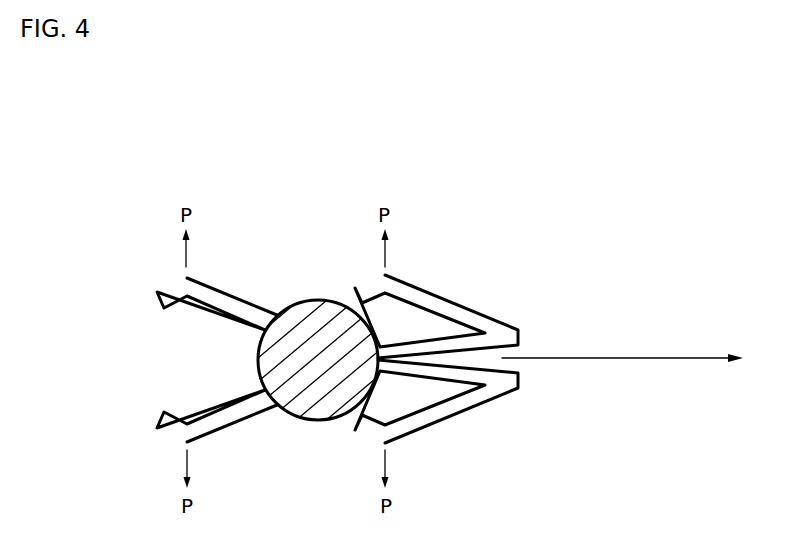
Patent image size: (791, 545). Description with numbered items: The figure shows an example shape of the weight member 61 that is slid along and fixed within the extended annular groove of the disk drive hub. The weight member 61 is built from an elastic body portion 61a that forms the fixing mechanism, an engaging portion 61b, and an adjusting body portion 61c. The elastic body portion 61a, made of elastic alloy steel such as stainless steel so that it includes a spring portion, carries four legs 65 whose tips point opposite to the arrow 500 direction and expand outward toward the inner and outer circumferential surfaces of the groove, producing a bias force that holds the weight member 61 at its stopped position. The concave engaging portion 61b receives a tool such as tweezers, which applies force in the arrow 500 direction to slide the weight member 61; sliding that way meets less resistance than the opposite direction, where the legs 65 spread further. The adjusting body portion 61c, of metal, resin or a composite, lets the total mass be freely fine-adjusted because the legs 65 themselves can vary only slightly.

The weight member 61 is at (213, 185).
The elastic body portion 61a is at (465, 290).
The engaging portion 61b is at (258, 354).
The adjusting body portion 61c is at (318, 395).
The legs 65 is at (240, 300).
The arrow direction 500 is at (627, 345).